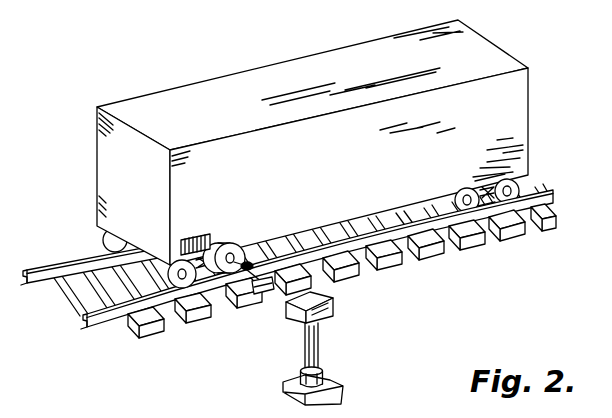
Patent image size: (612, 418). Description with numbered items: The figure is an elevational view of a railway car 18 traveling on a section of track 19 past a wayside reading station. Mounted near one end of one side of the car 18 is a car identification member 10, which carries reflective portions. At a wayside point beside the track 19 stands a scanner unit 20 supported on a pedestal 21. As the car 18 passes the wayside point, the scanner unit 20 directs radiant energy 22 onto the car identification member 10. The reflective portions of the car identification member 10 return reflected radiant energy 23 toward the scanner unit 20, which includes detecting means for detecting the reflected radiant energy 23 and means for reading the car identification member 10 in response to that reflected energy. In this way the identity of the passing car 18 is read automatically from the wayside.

The railway car 18 is at (234, 74).
The car identification member 10 is at (193, 238).
The track 19 is at (59, 264).
The radiant energy 22 is at (264, 267).
The reflected radiant energy 23 is at (262, 296).
The scanner unit 20 is at (334, 306).
The pedestal 21 is at (304, 352).